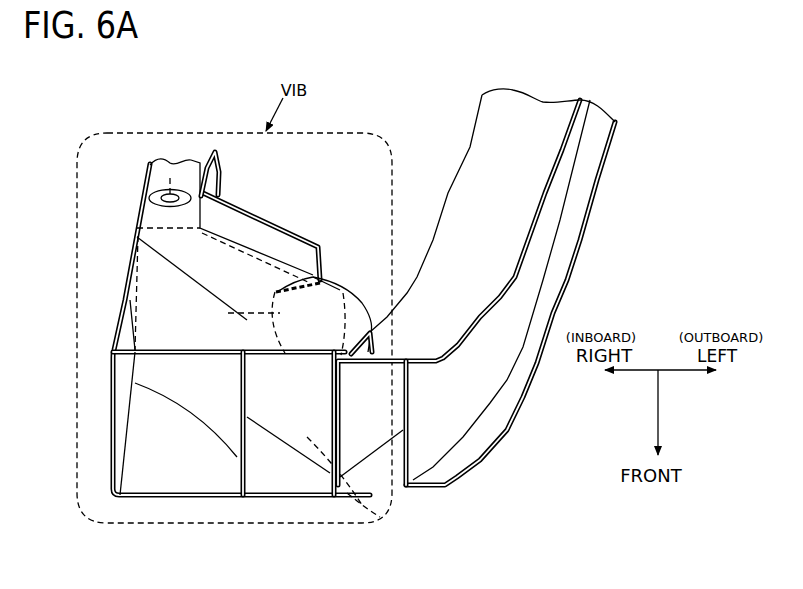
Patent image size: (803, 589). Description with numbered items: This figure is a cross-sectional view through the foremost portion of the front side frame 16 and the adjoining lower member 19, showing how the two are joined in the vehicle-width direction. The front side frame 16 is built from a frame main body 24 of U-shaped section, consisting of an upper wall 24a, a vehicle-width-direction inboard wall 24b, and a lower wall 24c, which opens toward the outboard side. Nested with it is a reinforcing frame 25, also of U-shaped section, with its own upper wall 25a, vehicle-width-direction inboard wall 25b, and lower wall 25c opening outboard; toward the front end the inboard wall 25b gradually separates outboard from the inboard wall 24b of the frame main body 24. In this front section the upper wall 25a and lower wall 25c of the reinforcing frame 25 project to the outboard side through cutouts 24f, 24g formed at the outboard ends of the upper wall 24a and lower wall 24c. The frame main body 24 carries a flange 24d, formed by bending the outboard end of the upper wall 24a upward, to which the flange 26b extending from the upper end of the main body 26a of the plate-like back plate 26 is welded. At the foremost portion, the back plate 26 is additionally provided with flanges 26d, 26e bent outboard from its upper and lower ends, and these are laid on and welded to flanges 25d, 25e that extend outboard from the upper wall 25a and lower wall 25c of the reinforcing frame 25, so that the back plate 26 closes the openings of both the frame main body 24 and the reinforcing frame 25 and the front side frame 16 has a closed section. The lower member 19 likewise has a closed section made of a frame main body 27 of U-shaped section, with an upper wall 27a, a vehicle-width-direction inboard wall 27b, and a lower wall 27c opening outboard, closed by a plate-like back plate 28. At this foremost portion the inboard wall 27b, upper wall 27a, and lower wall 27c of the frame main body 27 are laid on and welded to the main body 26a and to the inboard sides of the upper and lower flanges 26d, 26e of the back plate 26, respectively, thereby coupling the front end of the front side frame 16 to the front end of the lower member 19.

The front side frame 16 is at (118, 232).
The lower member 19 is at (457, 130).
The frame main body 24 is at (150, 184).
The upper wall 24a is at (143, 273).
The vehicle-width-direction inboard wall 24b is at (125, 395).
The lower wall 24c is at (162, 483).
The flange 24d is at (293, 250).
The cutout 24f is at (238, 315).
The cutout 24g is at (300, 505).
The reinforcing frame 25 is at (228, 449).
The upper wall 25a is at (306, 303).
The vehicle-width-direction inboard wall 25b is at (240, 390).
The lower wall 25c is at (273, 453).
The flange 25d is at (357, 308).
The flange 25e is at (353, 497).
The back plate 26 is at (313, 468).
The main body 26a is at (331, 398).
The flange 26b is at (323, 257).
The flange 26d is at (374, 338).
The flange 26e is at (393, 490).
The frame main body 27 is at (448, 195).
The upper wall 27a is at (523, 110).
The vehicle-width-direction inboard wall 27b is at (341, 415).
The lower wall 27c is at (399, 489).
The back plate 28 is at (493, 387).